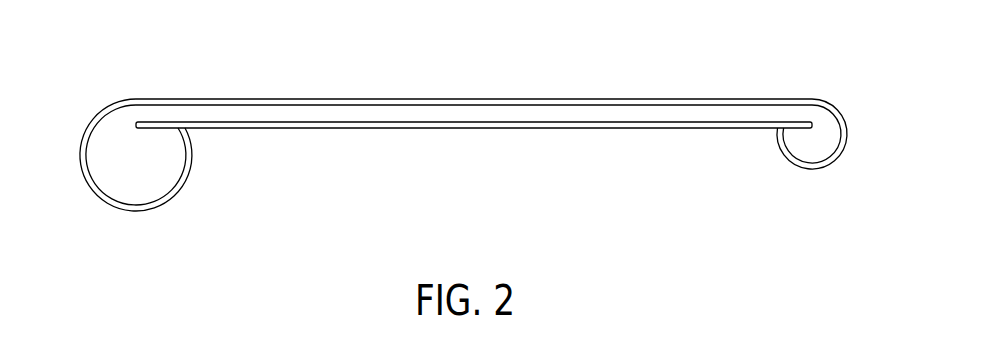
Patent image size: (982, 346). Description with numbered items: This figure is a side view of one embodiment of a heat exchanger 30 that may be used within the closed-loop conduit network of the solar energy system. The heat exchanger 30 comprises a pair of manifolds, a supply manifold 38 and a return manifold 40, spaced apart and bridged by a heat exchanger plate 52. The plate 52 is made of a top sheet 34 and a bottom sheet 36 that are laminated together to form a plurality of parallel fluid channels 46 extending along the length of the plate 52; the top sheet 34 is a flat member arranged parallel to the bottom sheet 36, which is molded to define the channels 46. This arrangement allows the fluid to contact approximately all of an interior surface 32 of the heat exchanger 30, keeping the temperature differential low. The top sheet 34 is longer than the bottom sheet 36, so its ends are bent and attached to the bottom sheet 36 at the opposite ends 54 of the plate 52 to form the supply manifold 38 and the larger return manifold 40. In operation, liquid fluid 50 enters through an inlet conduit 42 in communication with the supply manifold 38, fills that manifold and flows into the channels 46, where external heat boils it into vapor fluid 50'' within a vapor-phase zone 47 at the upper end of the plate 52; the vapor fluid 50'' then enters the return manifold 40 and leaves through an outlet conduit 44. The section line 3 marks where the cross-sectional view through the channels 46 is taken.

The heat exchanger 30 is at (463, 147).
The interior surface 32 is at (267, 122).
The top sheet 34 is at (385, 99).
The bottom sheet 36 is at (393, 128).
The supply manifold 38 is at (833, 162).
The return manifold 40 is at (105, 202).
The inlet conduit 42 is at (824, 127).
The outlet conduit 44 is at (117, 143).
The fluid channels 46 is at (622, 116).
The vapor-phase zone 47 is at (156, 112).
The liquid fluid 50 is at (757, 157).
The vapor fluid 50'' is at (132, 77).
The heat exchanger plate 52 is at (566, 99).
The opposite ends 54 is at (142, 128).
The section line 3- 3 is at (505, 198).